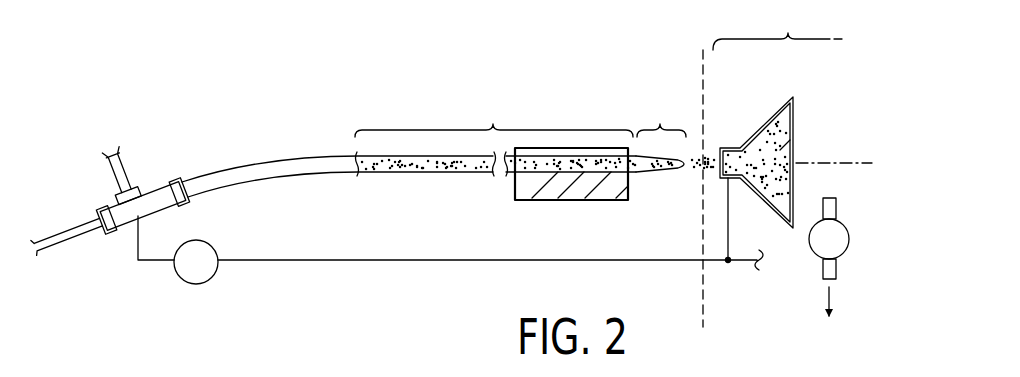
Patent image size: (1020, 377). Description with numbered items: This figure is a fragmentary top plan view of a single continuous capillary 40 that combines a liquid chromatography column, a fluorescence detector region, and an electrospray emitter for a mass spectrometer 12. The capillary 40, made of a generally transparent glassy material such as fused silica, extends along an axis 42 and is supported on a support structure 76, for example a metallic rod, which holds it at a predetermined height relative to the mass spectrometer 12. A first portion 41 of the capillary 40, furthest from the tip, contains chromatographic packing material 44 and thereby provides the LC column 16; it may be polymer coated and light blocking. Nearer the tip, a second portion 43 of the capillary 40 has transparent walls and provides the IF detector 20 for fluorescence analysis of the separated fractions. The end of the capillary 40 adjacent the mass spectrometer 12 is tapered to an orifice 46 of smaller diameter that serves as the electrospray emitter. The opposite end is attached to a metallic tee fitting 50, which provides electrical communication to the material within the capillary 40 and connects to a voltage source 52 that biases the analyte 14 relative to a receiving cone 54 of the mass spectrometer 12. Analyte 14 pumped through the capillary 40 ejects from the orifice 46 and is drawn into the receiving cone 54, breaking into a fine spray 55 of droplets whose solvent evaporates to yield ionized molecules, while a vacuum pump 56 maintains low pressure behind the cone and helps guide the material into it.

The mass spectrometer 12 is at (772, 166).
The analyte 14 is at (691, 173).
The liquid chromatography column 16 is at (411, 90).
The intrinsic fluorescence detector 20 is at (599, 76).
The capillary 40 is at (273, 165).
The first portion of the capillary 41 is at (494, 132).
The axis 42 is at (843, 161).
The second portion of the capillary 43 is at (661, 134).
The chromatographic packing material 44 is at (452, 159).
The orifice 46 is at (693, 146).
The metallic tee fitting 50 is at (155, 198).
The voltage source 52 is at (209, 270).
The receiving cone 54 is at (765, 119).
The fine spray 55 is at (795, 137).
The vacuum pump 56 is at (838, 245).
The support structure 76 is at (578, 191).